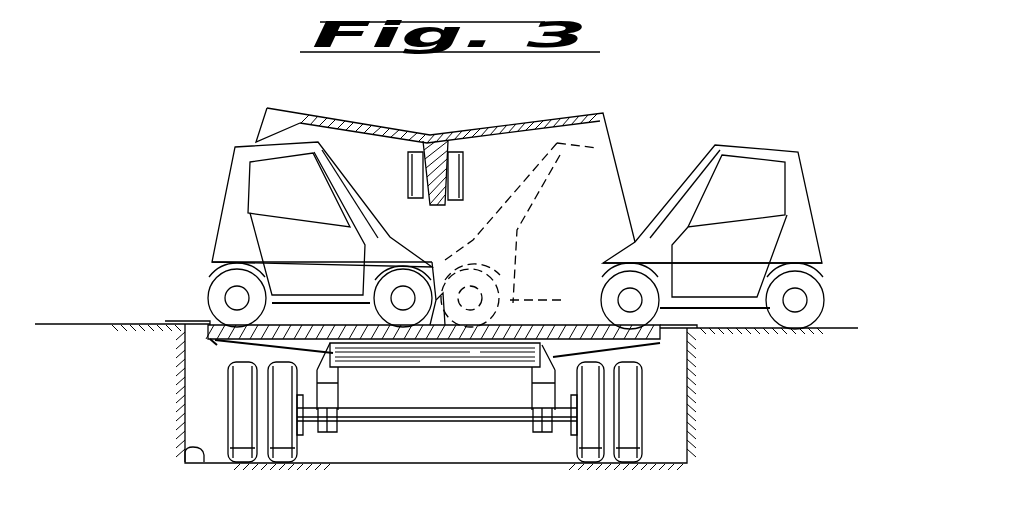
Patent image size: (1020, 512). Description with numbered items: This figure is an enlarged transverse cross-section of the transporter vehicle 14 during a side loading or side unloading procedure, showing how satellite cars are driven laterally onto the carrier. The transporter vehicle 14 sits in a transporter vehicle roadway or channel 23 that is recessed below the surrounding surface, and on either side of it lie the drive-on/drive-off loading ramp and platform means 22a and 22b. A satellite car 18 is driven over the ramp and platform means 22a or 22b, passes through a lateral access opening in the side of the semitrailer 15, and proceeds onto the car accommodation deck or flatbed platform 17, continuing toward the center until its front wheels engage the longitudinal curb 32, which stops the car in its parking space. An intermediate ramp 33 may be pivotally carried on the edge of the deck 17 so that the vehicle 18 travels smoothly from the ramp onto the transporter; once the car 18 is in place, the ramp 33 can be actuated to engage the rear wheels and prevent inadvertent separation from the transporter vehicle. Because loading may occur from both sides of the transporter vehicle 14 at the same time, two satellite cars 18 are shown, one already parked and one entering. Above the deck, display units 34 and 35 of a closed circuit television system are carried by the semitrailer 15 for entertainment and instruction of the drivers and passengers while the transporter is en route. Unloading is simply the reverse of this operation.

The transporter vehicle 14 is at (597, 110).
The semitrailer 15 is at (270, 121).
The flatbed platform 17 is at (678, 334).
The satellite car 18 is at (800, 198).
The ramp and platform means 22a is at (65, 324).
The ramp and platform means 22b is at (832, 327).
The transporter vehicle roadway 23 is at (183, 453).
The longitudinal curb 32 is at (437, 325).
The intermediate ramp 33 is at (676, 337).
The display unit 34 is at (410, 168).
The display unit 35 is at (463, 168).